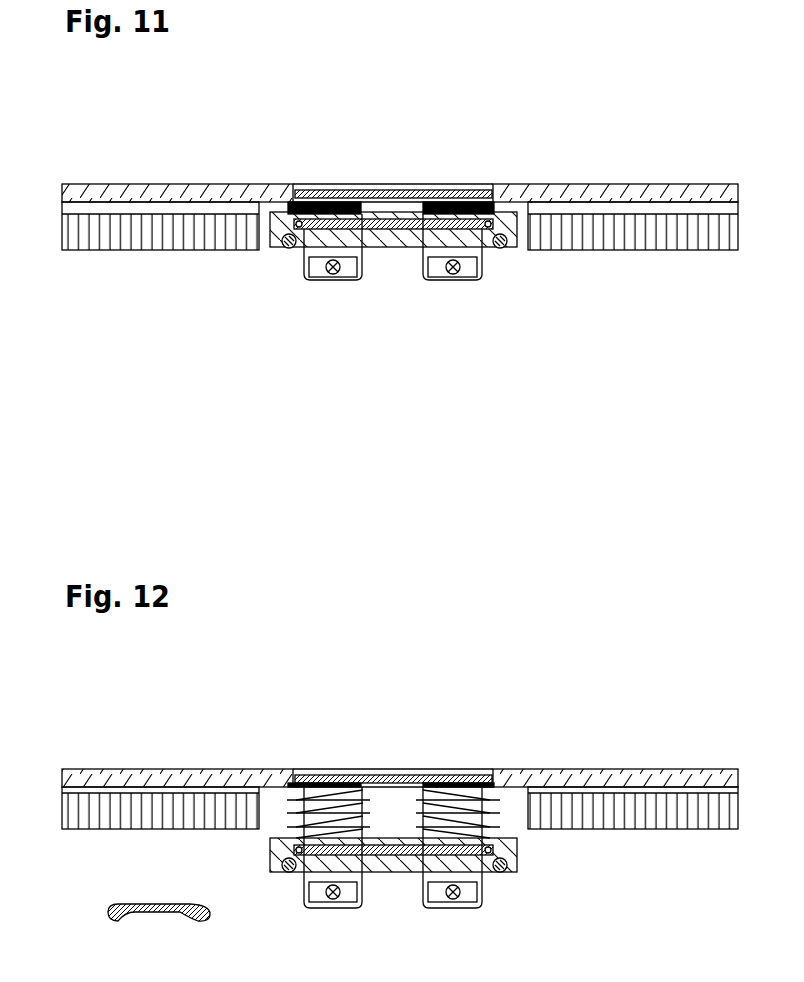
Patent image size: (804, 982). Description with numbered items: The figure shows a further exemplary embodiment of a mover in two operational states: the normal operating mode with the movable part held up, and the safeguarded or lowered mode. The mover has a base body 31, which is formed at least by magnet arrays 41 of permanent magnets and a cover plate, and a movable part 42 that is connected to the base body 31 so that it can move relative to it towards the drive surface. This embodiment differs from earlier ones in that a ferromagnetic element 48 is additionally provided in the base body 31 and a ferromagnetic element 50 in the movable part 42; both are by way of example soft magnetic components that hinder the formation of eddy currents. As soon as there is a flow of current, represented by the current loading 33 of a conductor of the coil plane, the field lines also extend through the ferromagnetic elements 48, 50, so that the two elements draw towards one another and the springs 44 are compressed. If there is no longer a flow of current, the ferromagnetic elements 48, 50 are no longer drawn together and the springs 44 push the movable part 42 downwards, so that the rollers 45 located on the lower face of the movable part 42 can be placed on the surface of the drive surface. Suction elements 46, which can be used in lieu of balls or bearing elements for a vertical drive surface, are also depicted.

In FIG. 11, the base body 31 is at (677, 196).
In FIG. 12, the base body 31 is at (677, 781).
In FIG. 12, the current loading 33 is at (320, 900).
In FIG. 11, the magnet arrays 41 is at (110, 240).
In FIG. 12, the magnet arrays 41 is at (110, 822).
In FIG. 11, the movable part 42 is at (373, 243).
In FIG. 12, the movable part 42 is at (373, 870).
In FIG. 11, the springs 44 is at (356, 202).
In FIG. 12, the springs 44 is at (358, 787).
In FIG. 11, the rollers 45 is at (288, 248).
In FIG. 12, the rollers 45 is at (287, 872).
In FIG. 12, the suction elements 46 is at (190, 920).
In FIG. 11, the ferromagnetic element 48 is at (404, 190).
In FIG. 12, the ferromagnetic element 48 is at (404, 775).
In FIG. 11, the ferromagnetic element 50 is at (416, 229).
In FIG. 12, the ferromagnetic element 50 is at (416, 855).